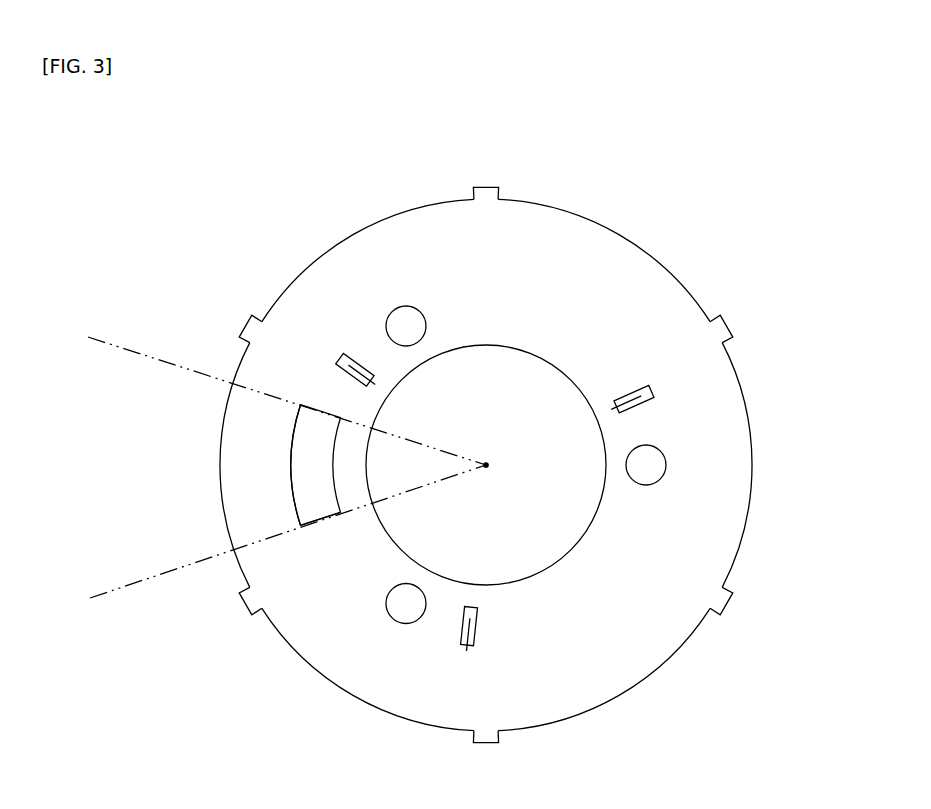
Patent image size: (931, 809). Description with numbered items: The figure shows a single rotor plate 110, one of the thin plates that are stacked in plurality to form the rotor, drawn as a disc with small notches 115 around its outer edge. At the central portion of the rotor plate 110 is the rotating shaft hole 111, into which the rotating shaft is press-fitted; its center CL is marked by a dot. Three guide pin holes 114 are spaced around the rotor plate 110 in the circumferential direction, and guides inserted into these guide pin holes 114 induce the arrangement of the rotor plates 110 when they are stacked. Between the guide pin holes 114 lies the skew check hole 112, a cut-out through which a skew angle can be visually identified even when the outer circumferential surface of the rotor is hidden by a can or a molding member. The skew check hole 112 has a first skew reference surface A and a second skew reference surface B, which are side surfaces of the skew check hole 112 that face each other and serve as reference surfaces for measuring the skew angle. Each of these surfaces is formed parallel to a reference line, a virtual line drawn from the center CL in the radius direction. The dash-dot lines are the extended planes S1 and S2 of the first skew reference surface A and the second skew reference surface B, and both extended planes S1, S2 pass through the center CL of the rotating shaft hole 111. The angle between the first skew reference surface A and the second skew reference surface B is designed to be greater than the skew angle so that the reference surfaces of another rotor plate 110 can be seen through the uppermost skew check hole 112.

The rotor plate 110 is at (625, 231).
The rotating shaft hole 111 is at (564, 372).
The skew check hole 112 is at (293, 487).
The guide pin holes 114 is at (403, 307).
The alignment notches 115 is at (487, 187).
The center of the rotating shaft hole CL is at (486, 465).
The first skew reference surface A is at (320, 523).
The second skew reference surface B is at (298, 432).
The extended plane of the first skew reference surface S1 is at (93, 596).
The extended plane of the second skew reference surface S2 is at (92, 338).